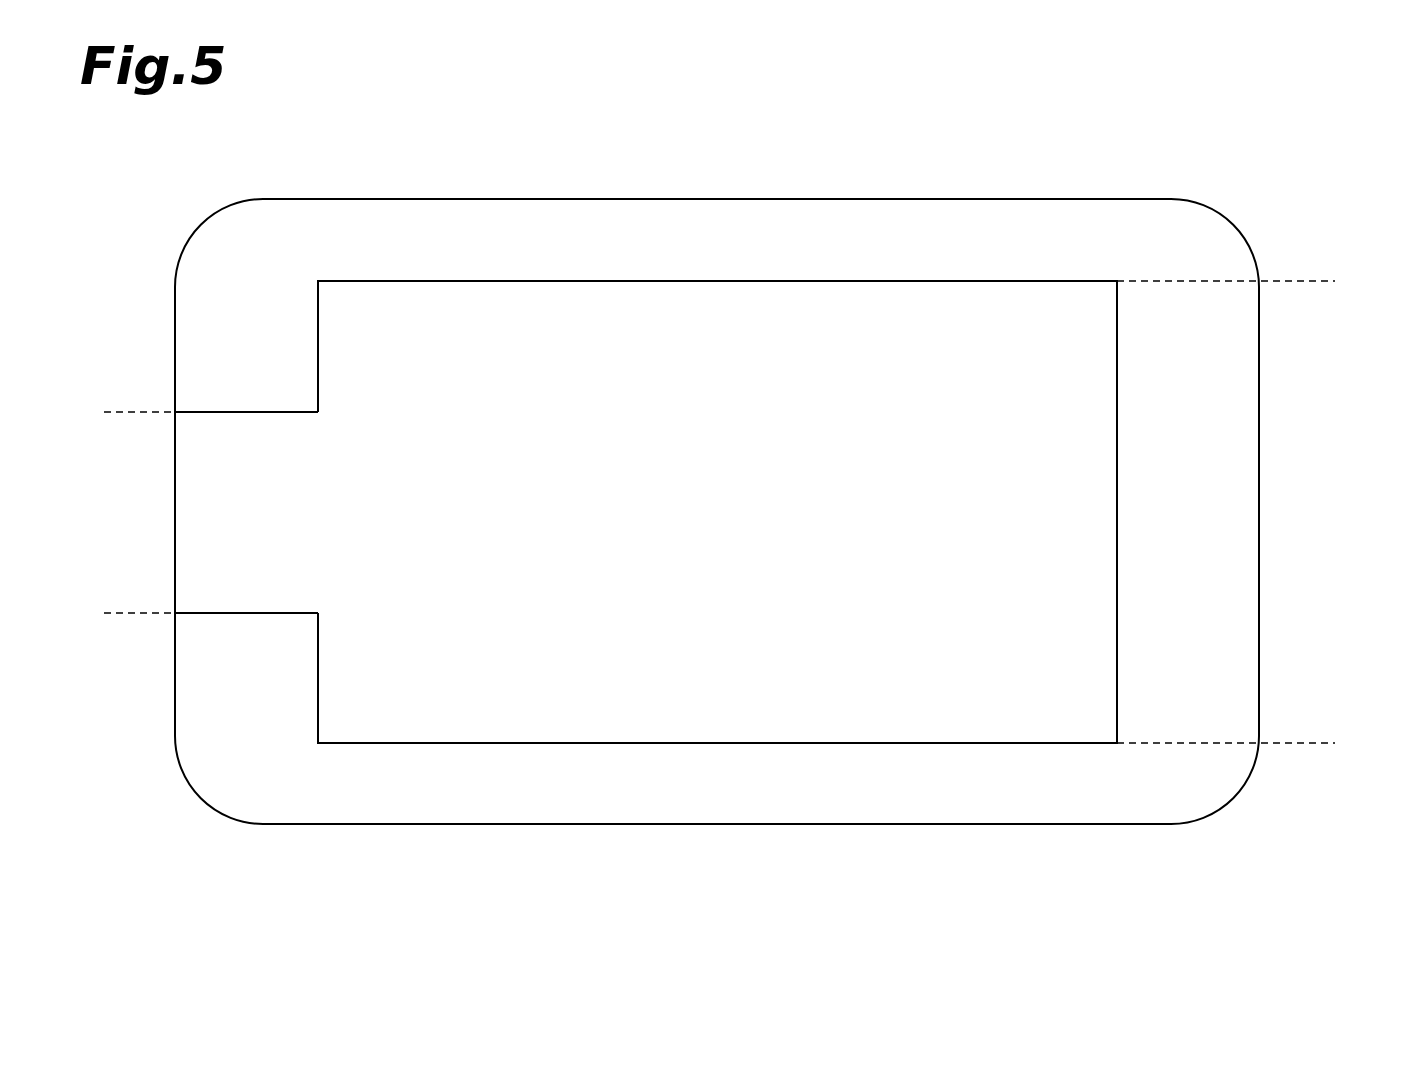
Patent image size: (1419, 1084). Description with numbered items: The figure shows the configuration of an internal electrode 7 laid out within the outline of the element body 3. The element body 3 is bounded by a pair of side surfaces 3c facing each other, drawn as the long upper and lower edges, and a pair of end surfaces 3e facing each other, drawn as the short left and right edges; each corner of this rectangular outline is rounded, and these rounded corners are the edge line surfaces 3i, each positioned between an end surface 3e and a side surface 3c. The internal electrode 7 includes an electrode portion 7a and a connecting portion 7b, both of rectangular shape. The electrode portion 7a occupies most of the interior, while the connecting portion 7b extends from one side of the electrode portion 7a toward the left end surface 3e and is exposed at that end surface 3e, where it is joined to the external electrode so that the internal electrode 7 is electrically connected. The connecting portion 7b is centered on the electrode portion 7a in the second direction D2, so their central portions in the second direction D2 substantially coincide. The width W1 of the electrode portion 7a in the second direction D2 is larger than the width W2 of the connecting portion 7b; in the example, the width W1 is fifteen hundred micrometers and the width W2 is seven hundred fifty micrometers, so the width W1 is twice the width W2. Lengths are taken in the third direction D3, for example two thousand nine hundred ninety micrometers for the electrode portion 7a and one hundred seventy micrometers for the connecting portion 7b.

The element body 3 is at (733, 493).
The edge line surface 3i is at (207, 223).
The side surface 3c is at (645, 199).
The end surface 3e is at (175, 353).
The internal electrode 7 is at (606, 438).
The electrode portion 7a is at (470, 305).
The connecting portion 7b is at (252, 585).
The width of the electrode portion W1 is at (1315, 283).
The width of the connecting portion W2 is at (127, 414).
The second direction D2 is at (1352, 832).
The third direction D3 is at (776, 932).